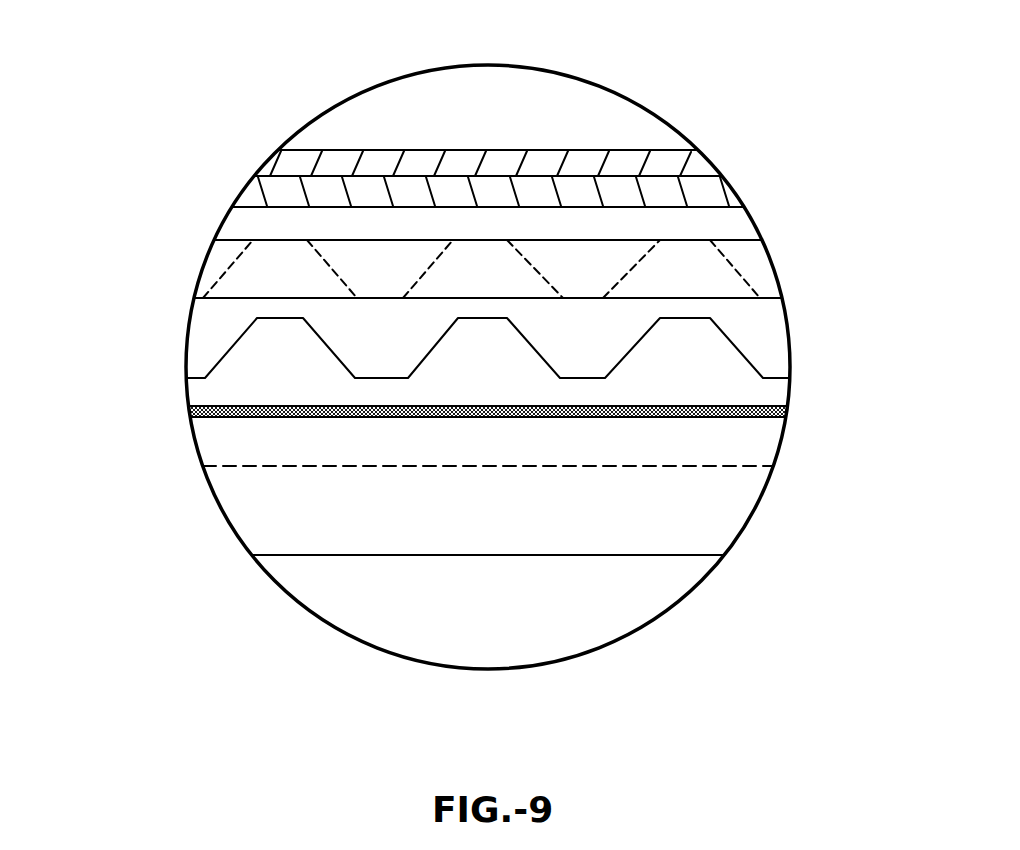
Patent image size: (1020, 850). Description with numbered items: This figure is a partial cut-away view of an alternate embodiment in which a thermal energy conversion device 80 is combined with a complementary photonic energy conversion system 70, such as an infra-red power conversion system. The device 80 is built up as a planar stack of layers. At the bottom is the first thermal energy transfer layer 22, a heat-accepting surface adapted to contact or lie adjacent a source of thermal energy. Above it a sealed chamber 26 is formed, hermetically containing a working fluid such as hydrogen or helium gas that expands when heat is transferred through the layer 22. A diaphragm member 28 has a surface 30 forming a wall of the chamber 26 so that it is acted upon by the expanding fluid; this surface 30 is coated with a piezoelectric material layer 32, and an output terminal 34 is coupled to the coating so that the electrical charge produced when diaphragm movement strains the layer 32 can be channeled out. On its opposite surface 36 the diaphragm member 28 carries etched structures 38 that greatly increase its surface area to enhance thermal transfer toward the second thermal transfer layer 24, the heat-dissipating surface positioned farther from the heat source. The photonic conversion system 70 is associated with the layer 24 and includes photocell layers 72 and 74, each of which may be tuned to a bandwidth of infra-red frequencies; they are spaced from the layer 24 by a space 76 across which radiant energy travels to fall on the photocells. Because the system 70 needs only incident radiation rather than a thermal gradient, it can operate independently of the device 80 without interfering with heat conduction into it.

The conversion device 80 is at (168, 164).
The photonic energy conversion system 70 is at (553, 121).
The photocell layer 74 is at (540, 148).
The photocell layer 72 is at (665, 208).
The space 76 is at (337, 219).
The second thermal transfer layer 24 is at (241, 239).
The surface of diaphragm member 36 is at (439, 316).
The structures 38 is at (433, 343).
The diaphragm member 28 is at (720, 373).
The output terminal 34 is at (787, 410).
The surface of diaphragm member 30 is at (258, 407).
The piezoelectric material layer 32 is at (308, 417).
The sealed chamber 26 is at (680, 443).
The first thermal energy transfer layer 22 is at (468, 556).